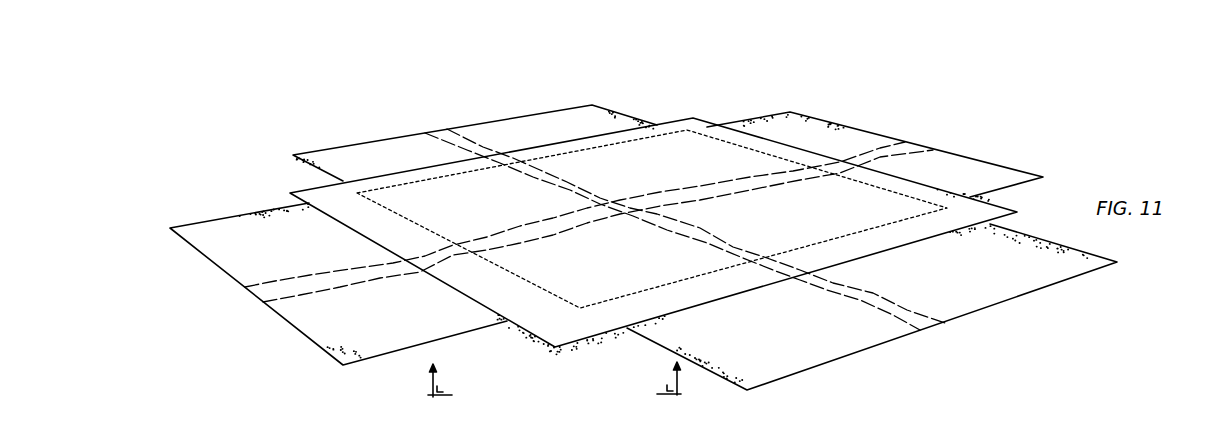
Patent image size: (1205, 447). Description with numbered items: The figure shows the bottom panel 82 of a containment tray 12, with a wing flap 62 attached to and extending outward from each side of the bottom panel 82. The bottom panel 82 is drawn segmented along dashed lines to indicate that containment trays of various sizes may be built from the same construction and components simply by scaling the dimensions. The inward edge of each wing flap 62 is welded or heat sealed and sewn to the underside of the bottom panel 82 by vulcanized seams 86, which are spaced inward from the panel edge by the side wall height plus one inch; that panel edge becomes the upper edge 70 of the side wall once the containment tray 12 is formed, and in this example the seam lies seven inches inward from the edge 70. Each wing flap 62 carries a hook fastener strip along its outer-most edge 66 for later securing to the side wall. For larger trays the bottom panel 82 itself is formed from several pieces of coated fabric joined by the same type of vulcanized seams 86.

The containment tray 12 is at (541, 393).
The wing flap 62 is at (293, 156).
The outer-most edge 66 is at (447, 129).
The upper edge 70 is at (330, 217).
The bottom panel 82 is at (475, 212).
The vulcanized seam 86 is at (537, 287).